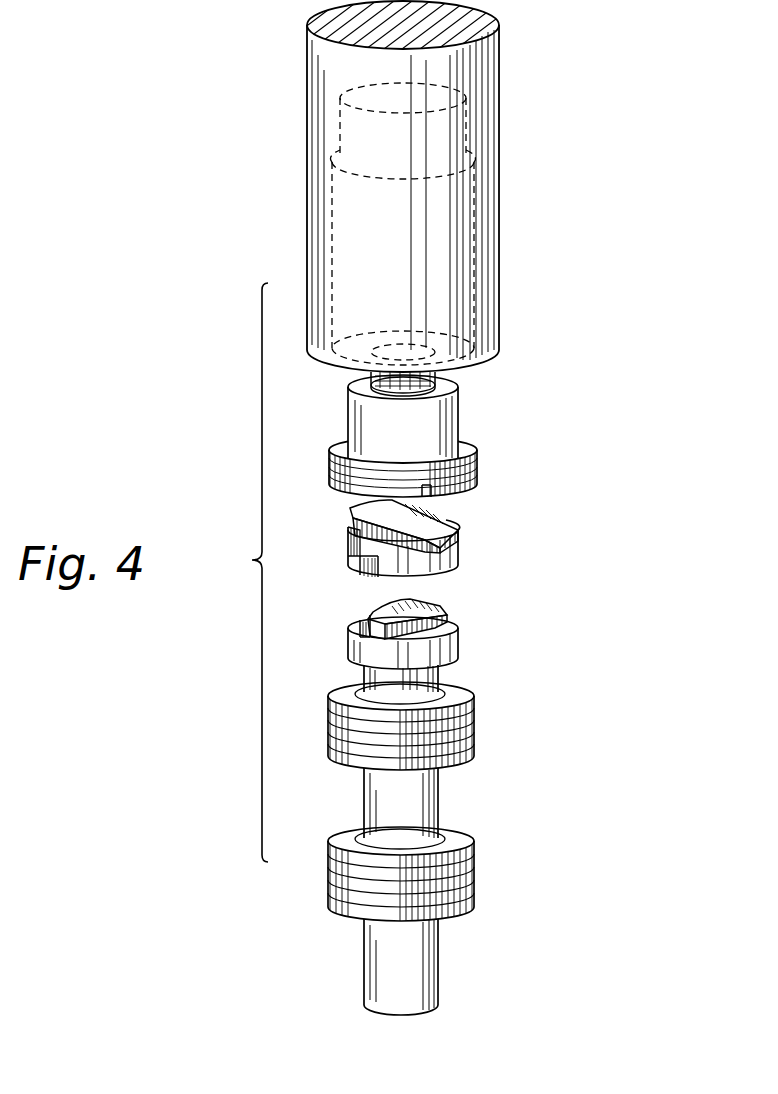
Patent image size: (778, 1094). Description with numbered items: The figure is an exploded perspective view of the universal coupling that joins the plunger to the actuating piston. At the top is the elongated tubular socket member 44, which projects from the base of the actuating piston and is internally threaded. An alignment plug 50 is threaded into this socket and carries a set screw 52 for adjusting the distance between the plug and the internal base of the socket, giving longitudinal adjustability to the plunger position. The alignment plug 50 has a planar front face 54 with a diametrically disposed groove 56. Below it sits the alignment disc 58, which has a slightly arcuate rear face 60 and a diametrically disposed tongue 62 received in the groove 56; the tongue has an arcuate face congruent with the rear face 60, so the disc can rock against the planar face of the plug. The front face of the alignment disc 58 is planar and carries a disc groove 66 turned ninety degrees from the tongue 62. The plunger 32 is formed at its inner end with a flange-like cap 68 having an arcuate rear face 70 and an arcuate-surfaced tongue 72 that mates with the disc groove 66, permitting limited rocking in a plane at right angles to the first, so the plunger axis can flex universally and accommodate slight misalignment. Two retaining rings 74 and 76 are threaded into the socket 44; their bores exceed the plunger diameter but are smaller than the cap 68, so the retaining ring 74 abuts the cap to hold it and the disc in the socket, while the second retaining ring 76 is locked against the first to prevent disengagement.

The plunger 32 is at (438, 982).
The tubular socket member 44 is at (493, 192).
The alignment plug 50 is at (437, 422).
The set screw 52 is at (453, 380).
The planar front face 54 is at (340, 488).
The groove 56 is at (428, 492).
The alignment disc 58 is at (452, 565).
The arcuate rear face 60 is at (348, 532).
The tongue 62 is at (352, 517).
The disc groove 66 is at (375, 573).
The flange-like cap 68 is at (460, 662).
The arcuate rear face 70 is at (433, 630).
The tongue 72 is at (372, 636).
The retaining ring 74 is at (474, 735).
The second retaining ring 76 is at (474, 878).